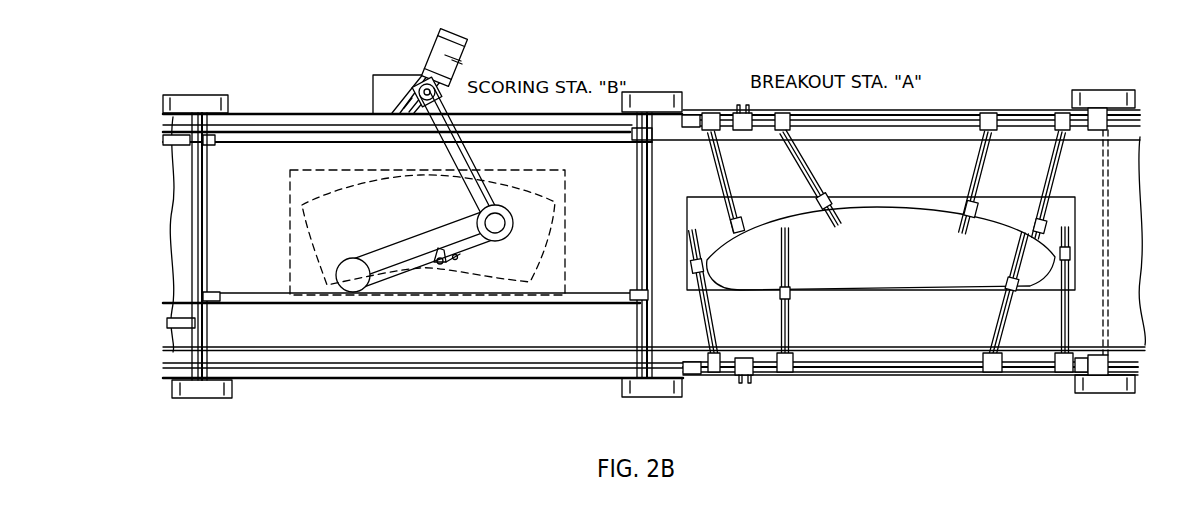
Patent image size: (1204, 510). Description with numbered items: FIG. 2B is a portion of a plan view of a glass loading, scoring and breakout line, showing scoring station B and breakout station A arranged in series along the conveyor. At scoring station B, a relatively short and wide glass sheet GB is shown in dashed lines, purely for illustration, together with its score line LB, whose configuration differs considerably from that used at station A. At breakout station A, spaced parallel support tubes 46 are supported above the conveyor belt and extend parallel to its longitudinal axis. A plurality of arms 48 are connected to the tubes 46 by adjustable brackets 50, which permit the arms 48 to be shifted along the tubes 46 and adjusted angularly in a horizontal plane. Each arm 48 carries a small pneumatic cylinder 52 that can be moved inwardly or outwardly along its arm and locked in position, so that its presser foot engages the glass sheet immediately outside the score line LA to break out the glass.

The support tube 46 is at (943, 120).
The arm 48 is at (808, 168).
The adjustable bracket 50 is at (794, 358).
The pneumatic cylinder 52 is at (791, 293).
The score line LB is at (516, 184).
The glass sheet GB is at (564, 186).
The score line LA is at (877, 205).